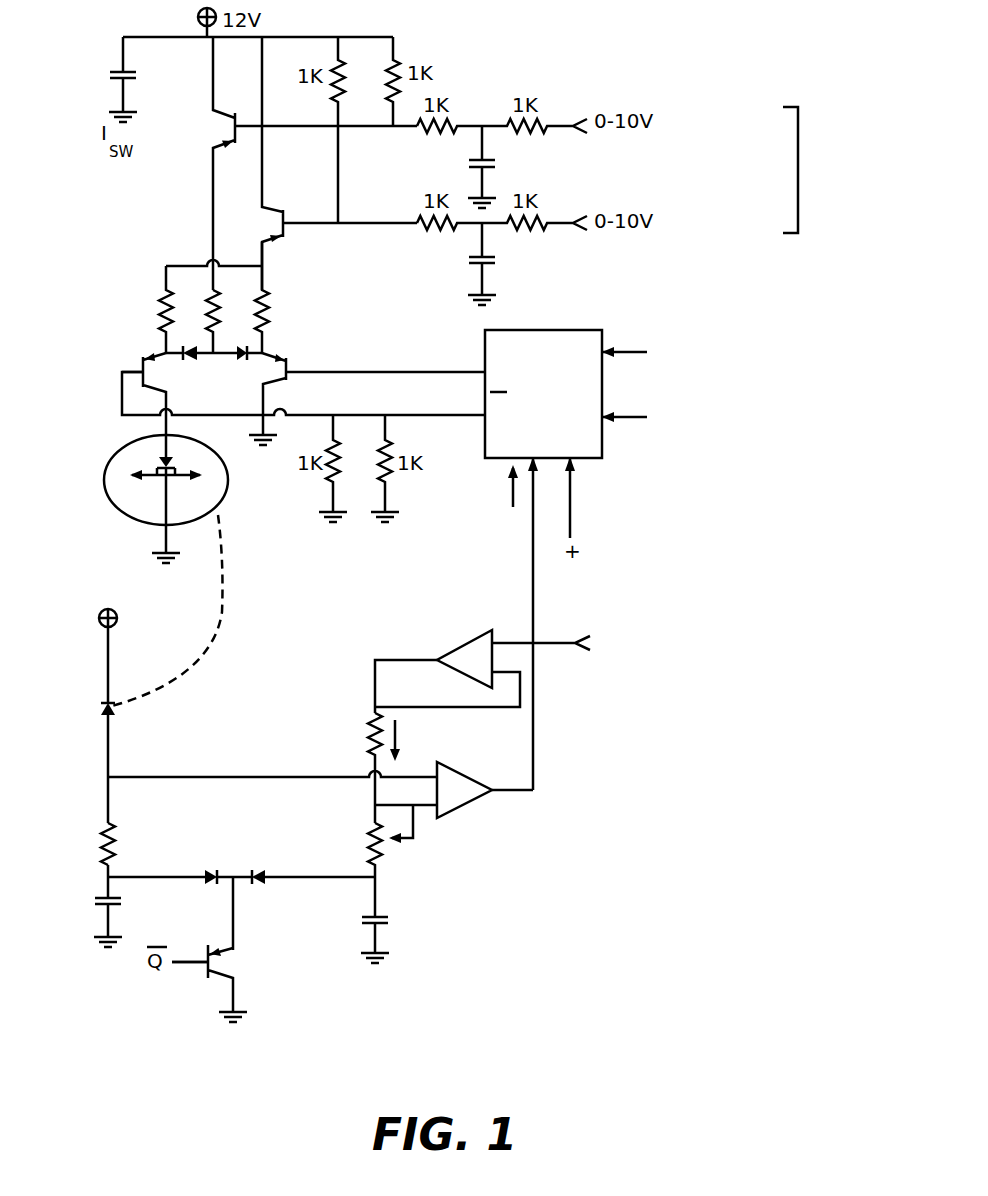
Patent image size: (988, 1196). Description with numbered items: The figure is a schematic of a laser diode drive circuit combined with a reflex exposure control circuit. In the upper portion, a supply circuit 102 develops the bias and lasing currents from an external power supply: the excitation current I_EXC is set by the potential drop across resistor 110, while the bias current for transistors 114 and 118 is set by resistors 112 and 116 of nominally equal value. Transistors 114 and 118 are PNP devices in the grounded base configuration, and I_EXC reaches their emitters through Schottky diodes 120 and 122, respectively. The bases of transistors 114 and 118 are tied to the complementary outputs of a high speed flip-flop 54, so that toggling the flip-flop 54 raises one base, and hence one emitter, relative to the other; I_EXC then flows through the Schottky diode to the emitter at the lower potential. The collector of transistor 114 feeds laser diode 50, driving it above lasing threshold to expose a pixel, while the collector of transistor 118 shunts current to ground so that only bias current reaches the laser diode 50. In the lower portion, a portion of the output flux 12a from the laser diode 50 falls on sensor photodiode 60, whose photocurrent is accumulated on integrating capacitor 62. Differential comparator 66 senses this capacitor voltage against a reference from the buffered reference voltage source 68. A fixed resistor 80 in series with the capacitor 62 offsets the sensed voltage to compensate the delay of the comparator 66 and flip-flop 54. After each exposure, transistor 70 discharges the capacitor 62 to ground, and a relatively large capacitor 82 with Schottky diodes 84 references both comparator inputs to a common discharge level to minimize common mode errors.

The resistor 112 is at (163, 292).
The resistor 110 is at (215, 300).
The resistor 116 is at (265, 297).
The Schottky diode 120 is at (183, 352).
The Schottky diode 122 is at (245, 350).
The transistor 114 is at (123, 385).
The transistor 118 is at (288, 380).
The high speed flip-flop 54 is at (567, 330).
The supply circuit 102 is at (799, 170).
The laser diode 50 is at (170, 460).
The portion of the output flux 12a is at (222, 614).
The sensor photodiode 60 is at (122, 712).
The fixed resistor 80 is at (112, 838).
The integrating capacitor 62 is at (95, 900).
The Schottky diodes 84 is at (260, 870).
The transistor 70 is at (192, 965).
The reference voltage source 68 is at (375, 670).
The differential comparator 66 is at (478, 773).
The capacitor 82 is at (385, 914).